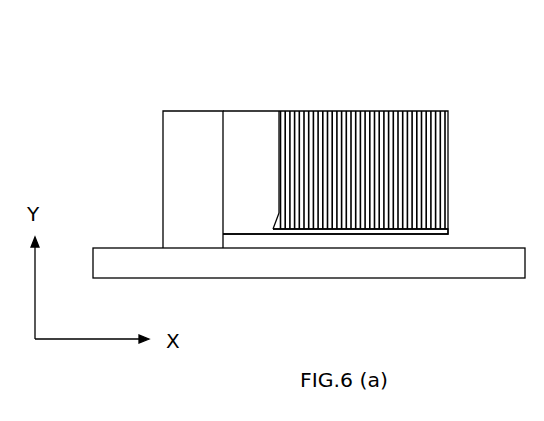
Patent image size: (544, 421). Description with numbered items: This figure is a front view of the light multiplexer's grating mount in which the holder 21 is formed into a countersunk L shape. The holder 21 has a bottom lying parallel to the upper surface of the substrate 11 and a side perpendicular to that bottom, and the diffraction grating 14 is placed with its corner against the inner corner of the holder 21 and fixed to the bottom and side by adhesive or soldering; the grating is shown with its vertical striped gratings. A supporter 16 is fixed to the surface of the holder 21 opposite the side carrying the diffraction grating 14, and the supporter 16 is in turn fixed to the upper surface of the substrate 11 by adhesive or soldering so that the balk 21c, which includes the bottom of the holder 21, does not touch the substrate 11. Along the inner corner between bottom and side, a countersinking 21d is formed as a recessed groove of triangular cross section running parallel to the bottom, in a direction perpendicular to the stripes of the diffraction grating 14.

The substrate 11 is at (130, 248).
The supporter 16 is at (180, 111).
The holder 21 is at (243, 111).
The balk 21c is at (449, 232).
The countersinking 21d is at (278, 214).
The diffraction grating 14 is at (365, 111).